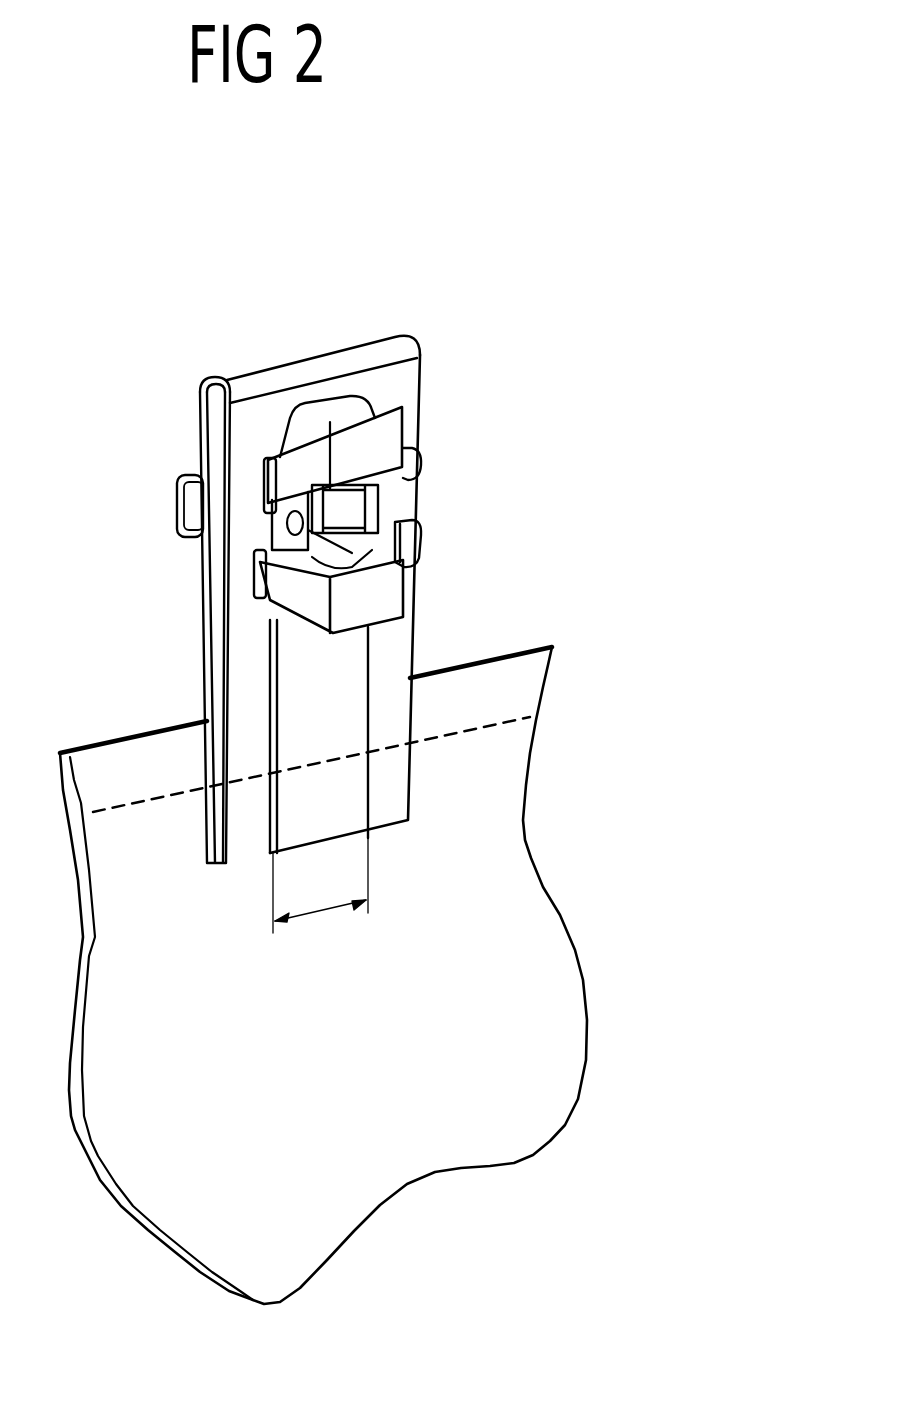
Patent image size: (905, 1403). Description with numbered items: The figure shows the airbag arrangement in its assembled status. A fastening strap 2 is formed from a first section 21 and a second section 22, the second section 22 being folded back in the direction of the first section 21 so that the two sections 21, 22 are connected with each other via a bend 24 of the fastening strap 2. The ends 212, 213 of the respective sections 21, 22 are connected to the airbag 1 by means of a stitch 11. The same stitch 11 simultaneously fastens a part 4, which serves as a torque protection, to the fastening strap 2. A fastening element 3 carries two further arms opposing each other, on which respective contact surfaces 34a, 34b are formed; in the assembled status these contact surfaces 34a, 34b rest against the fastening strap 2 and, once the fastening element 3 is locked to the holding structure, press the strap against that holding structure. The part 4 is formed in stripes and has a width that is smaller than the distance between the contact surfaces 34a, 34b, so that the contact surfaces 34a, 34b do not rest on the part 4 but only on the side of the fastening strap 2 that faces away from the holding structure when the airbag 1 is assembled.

The airbag 1 is at (166, 1250).
The fastening strap 2 is at (307, 588).
The fastening element 3 is at (388, 430).
The part (torque protection) 4 is at (377, 600).
The stitch 11 is at (162, 797).
The first section 21 is at (203, 563).
The second section 22 is at (400, 500).
The bend 24 is at (373, 355).
The contact surface 34a is at (262, 470).
The contact surface 34b is at (410, 473).
The end 212 is at (205, 847).
The end 213 is at (390, 807).